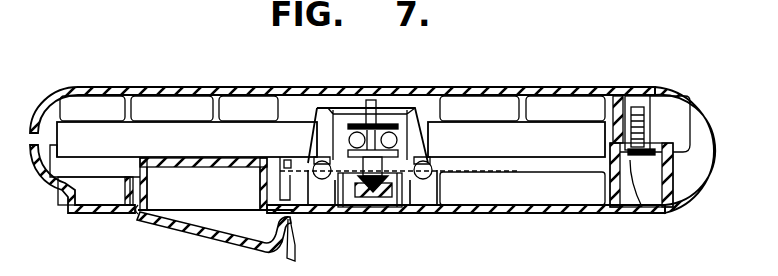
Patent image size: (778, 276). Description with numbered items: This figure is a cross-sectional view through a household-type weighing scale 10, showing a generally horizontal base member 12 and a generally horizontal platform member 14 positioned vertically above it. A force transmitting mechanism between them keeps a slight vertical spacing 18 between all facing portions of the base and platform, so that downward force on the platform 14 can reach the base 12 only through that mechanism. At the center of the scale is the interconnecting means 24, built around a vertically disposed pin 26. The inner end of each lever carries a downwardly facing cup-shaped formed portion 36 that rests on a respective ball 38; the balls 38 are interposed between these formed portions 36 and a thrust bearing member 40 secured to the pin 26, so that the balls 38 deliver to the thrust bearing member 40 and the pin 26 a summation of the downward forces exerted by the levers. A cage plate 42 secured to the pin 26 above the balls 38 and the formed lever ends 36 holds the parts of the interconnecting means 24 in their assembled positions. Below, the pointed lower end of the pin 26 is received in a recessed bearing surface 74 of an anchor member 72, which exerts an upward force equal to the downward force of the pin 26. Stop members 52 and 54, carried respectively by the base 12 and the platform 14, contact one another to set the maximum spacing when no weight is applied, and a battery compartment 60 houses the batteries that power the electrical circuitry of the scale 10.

The weighing scale 10 is at (531, 78).
The base member 12 is at (590, 213).
The platform member 14 is at (611, 90).
The vertical spacing 18 is at (690, 137).
The interconnecting means 24 is at (393, 120).
The pin 26 is at (395, 175).
The cup-shaped formed portion 36 is at (395, 130).
The ball 38 is at (398, 151).
The thrust bearing member 40 is at (347, 153).
The cage plate 42 is at (351, 126).
The stop member 52 is at (692, 150).
The stop member 54 is at (670, 203).
The battery compartment 60 is at (228, 195).
The anchor member 72 is at (350, 198).
The recessed bearing surface 74 is at (383, 193).